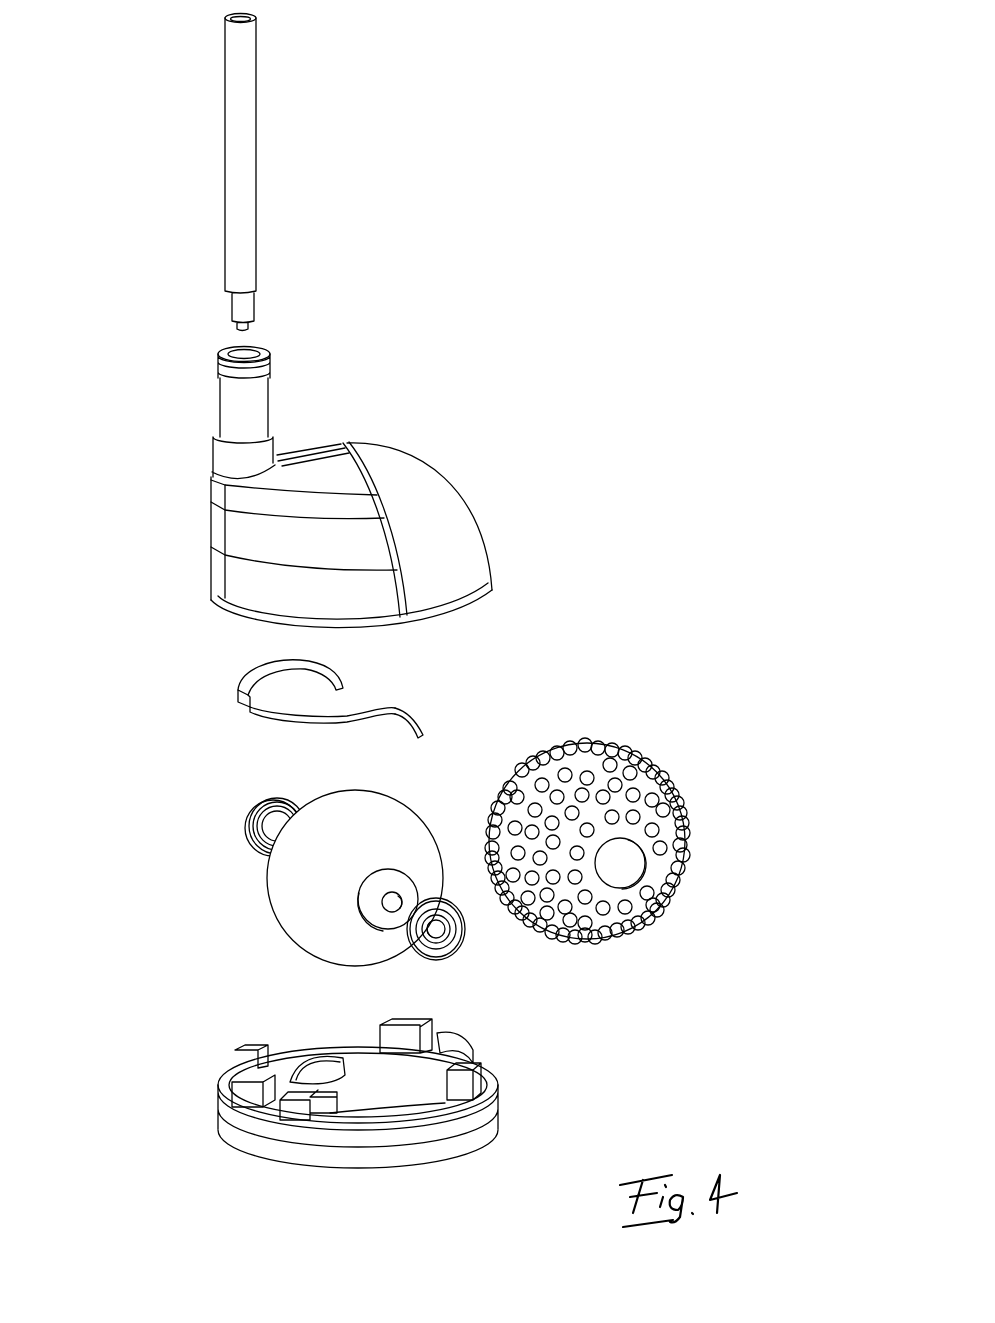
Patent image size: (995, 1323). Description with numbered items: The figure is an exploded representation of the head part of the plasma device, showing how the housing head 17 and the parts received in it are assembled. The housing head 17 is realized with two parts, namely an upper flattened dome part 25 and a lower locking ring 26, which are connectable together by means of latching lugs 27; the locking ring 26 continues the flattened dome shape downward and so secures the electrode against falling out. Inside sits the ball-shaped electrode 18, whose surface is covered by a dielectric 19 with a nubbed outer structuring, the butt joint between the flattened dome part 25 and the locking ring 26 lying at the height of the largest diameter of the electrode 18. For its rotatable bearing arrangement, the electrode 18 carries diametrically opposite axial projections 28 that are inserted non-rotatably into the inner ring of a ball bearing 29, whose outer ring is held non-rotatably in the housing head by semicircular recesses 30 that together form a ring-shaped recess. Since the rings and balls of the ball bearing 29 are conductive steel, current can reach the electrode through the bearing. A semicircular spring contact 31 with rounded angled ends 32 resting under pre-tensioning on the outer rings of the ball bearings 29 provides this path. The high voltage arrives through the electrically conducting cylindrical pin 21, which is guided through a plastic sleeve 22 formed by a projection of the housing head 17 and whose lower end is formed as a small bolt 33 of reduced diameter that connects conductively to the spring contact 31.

The head housing 17 is at (213, 1090).
The electrode 18 is at (417, 810).
The dielectric 19 is at (677, 785).
The electrically conducting cylindrical pin 21 is at (252, 157).
The plastic sleeve 22 is at (275, 410).
The flattened dome part 25 is at (480, 530).
The locking ring 26 is at (490, 1123).
The latching lugs 27 is at (480, 1040).
The axial projections 28 is at (387, 913).
The ball bearing 29 is at (454, 956).
The semicircular recesses 30 is at (312, 1072).
The spring contact 31 is at (375, 705).
The rounded angled ends 32 is at (425, 728).
The small bolt 33 is at (245, 329).